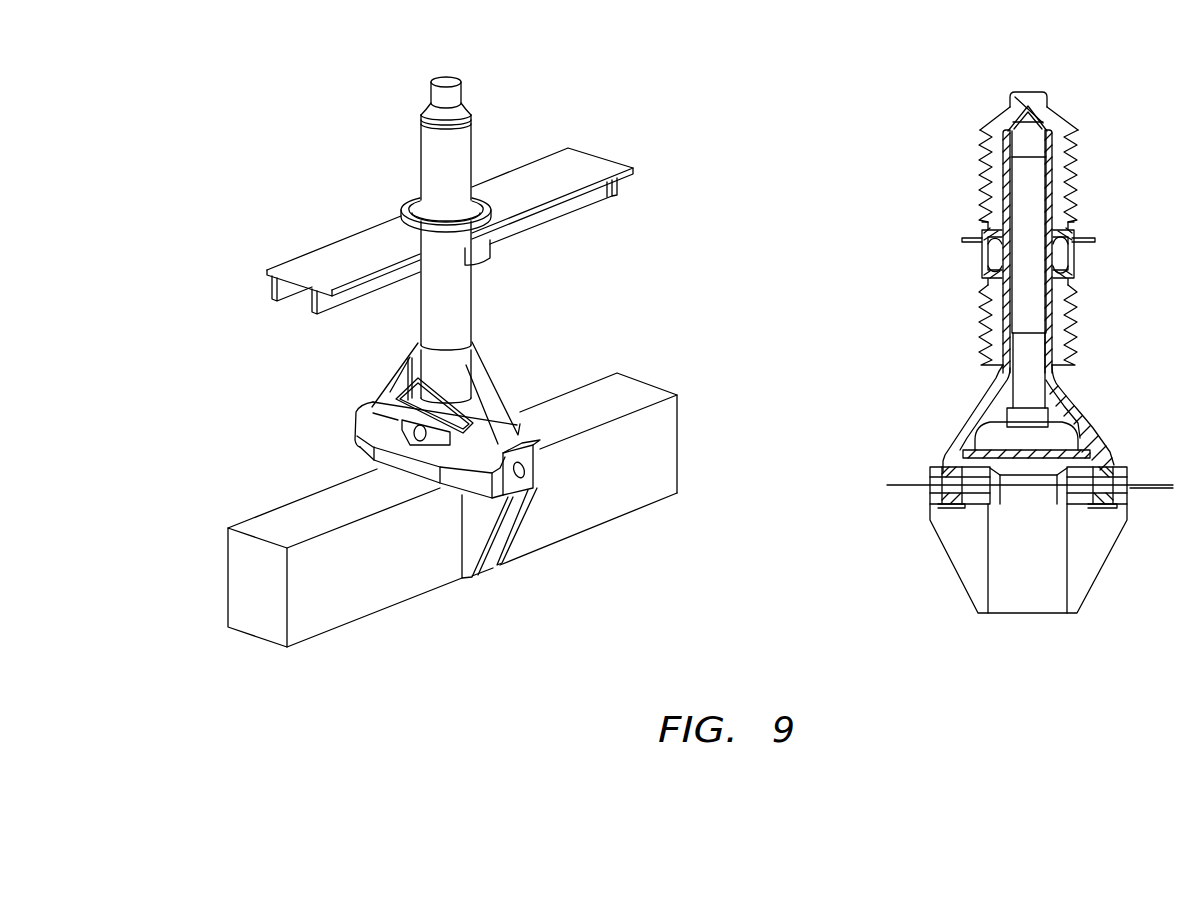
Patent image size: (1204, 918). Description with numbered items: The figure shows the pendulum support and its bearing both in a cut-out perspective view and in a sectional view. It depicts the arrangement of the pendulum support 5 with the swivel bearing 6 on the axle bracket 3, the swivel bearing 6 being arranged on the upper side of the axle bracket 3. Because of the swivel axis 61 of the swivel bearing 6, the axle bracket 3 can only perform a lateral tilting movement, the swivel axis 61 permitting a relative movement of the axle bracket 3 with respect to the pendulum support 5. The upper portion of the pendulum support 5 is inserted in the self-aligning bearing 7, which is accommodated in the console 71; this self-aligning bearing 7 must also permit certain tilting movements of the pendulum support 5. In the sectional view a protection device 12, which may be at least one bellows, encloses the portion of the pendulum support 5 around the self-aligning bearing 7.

The axle bracket 3 is at (377, 587).
The pendulum support 5 is at (467, 308).
The swivel bearing 6 is at (530, 470).
The swivel axis 61 is at (1145, 490).
The self-aligning bearing 7 is at (408, 207).
The console 71 is at (315, 253).
The protection device 12 is at (1077, 147).